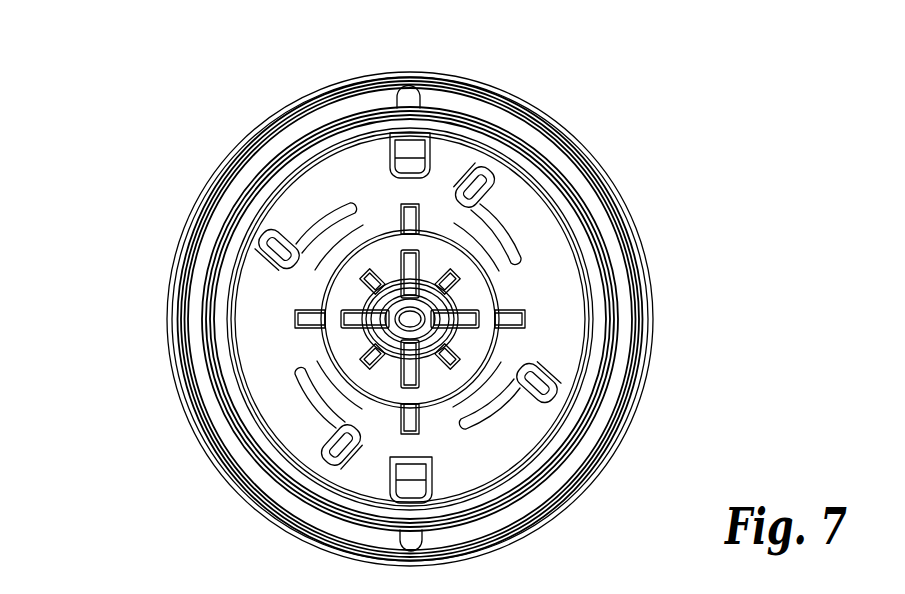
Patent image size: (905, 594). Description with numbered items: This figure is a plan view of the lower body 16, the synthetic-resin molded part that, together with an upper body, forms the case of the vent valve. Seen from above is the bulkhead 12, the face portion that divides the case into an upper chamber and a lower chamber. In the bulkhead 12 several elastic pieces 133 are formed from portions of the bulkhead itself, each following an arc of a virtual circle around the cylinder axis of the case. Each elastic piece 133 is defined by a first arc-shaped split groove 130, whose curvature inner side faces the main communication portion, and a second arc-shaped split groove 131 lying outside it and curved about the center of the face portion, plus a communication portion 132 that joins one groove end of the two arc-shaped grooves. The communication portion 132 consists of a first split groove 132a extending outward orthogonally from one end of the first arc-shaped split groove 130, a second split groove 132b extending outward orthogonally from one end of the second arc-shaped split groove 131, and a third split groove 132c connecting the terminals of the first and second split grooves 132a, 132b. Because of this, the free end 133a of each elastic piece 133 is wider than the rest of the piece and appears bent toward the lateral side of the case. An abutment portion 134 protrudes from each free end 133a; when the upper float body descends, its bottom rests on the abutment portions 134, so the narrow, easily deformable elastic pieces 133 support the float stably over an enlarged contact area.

The bulkhead 12 is at (555, 275).
The lower body 16 is at (533, 104).
The first arc-shaped split groove 130 is at (323, 218).
The second arc-shaped split groove 131 is at (298, 236).
The communication portion 132 is at (376, 294).
The first split groove 132a is at (298, 282).
The second split groove 132b is at (272, 240).
The third split groove 132c is at (267, 243).
The elastic piece 133 is at (345, 205).
The free end 133a is at (283, 265).
The abutment portion 134 is at (376, 297).